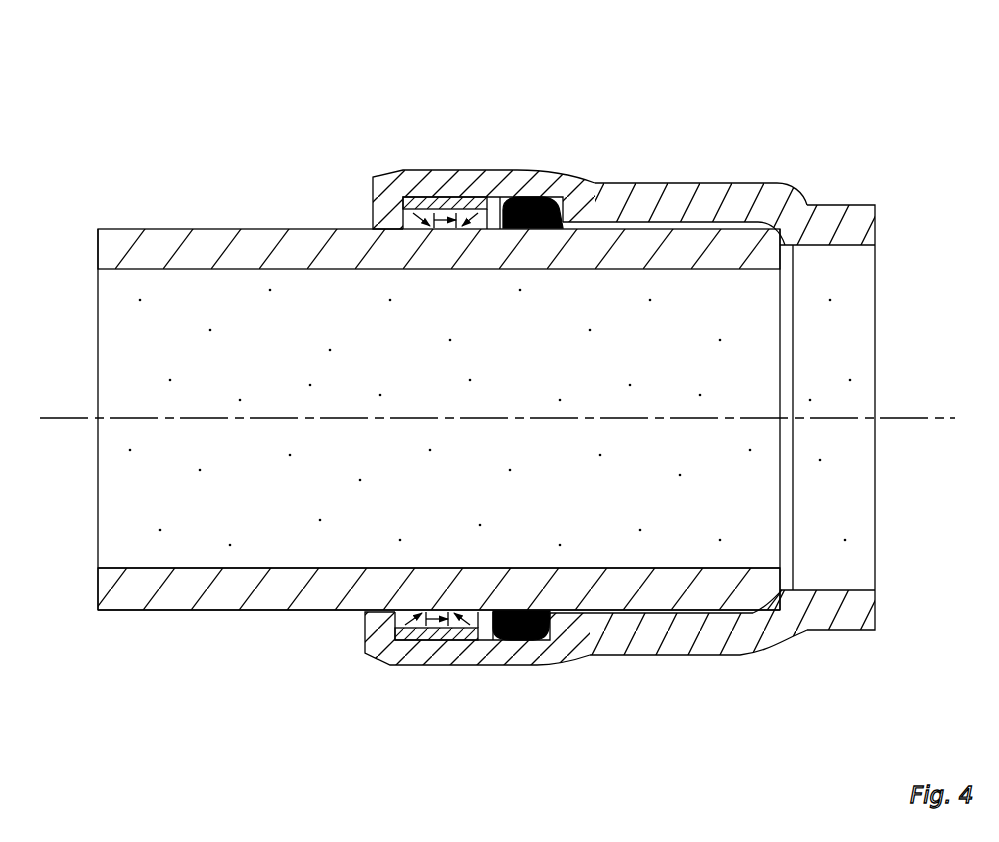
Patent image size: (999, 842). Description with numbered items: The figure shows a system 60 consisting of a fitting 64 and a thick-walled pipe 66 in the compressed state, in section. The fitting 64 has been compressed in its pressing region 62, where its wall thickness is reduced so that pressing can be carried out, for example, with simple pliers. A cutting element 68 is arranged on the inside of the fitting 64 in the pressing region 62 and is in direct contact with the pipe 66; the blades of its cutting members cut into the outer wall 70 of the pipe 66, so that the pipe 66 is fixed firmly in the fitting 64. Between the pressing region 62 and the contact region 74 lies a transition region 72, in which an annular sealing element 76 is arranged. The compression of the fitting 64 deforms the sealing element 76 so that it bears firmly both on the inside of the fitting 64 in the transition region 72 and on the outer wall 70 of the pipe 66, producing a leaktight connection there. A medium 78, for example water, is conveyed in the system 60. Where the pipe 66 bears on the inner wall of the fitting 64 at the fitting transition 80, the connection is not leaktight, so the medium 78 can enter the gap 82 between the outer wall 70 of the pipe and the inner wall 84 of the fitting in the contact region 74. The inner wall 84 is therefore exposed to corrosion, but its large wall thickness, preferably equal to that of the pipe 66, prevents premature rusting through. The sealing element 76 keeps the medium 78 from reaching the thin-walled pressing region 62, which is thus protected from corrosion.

The system 60 is at (731, 62).
The pressing region 62 is at (459, 169).
The fitting 64 is at (700, 136).
The pipe 66 is at (176, 196).
The cutting element 68 is at (432, 198).
The outer wall 70 is at (278, 227).
The transition region 72 is at (575, 177).
The contact region 74 is at (733, 181).
The annular sealing element 76 is at (521, 198).
The medium 78 is at (183, 312).
The fitting transition 80 is at (804, 188).
The gap 82 is at (624, 226).
The inner wall 84 is at (680, 182).